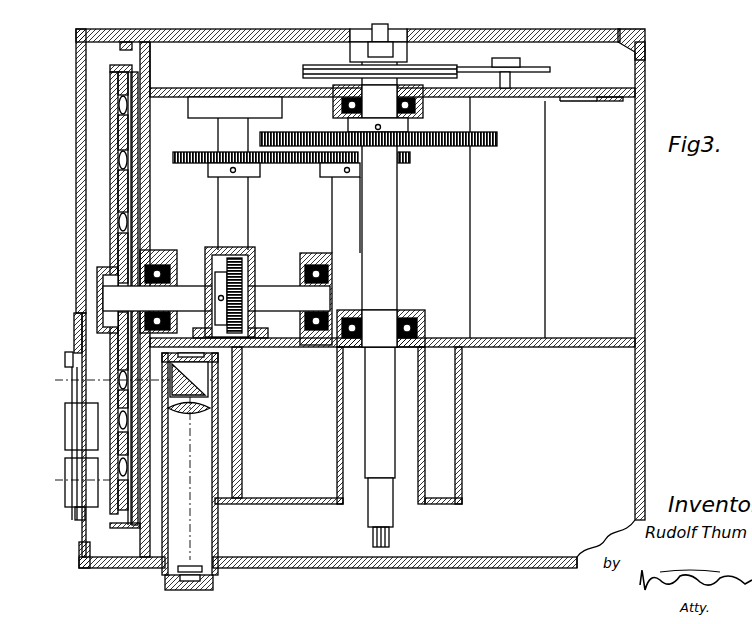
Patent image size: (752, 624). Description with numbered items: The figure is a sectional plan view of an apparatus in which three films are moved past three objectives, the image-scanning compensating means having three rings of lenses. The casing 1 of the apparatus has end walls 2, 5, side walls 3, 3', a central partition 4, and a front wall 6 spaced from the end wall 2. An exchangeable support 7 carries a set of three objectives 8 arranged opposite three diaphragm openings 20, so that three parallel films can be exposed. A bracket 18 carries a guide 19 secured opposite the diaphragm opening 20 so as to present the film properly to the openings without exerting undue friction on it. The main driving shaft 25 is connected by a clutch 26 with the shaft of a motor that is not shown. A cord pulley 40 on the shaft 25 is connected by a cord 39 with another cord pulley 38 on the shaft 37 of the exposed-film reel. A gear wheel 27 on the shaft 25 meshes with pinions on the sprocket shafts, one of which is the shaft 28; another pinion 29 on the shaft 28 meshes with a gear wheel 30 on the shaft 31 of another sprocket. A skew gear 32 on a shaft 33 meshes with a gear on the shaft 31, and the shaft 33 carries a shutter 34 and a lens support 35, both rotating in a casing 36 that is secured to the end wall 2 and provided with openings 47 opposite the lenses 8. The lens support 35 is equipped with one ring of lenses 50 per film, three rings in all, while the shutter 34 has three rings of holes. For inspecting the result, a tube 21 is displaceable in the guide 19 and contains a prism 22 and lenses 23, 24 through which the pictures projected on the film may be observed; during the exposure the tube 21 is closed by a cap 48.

The casing 1 is at (363, 302).
The end wall 2 is at (150, 197).
The side wall 3 is at (360, 33).
The side wall 3' is at (357, 559).
The central partition 4 is at (484, 338).
The end wall 5 is at (645, 204).
The front wall 6 is at (76, 243).
The exchangeable support 7 is at (75, 318).
The objectives 8 is at (64, 482).
The bracket 18 is at (257, 498).
The guide 19 is at (226, 505).
The diaphragm openings 20 is at (148, 386).
The tube 21 is at (168, 525).
The prism 22 is at (206, 383).
The lens 23 is at (211, 409).
The lens 24 is at (213, 585).
The main driving shaft 25 is at (395, 236).
The clutch 26 is at (384, 28).
The gear wheel 27 is at (455, 148).
The shaft 28 is at (334, 213).
The pinion 29 is at (313, 165).
The gear wheel 30 is at (205, 154).
The shaft 31 is at (222, 213).
The skew gear 32 is at (254, 252).
The shaft 33 is at (188, 286).
The shutter 34 is at (138, 121).
The lens support 35 is at (119, 210).
The casing 36 is at (119, 124).
The shaft 37 is at (512, 80).
The cord pulley 38 is at (525, 60).
The cord 39 is at (462, 66).
The cord pulley 40 is at (302, 72).
The openings 47 is at (116, 430).
The cap 48 is at (172, 590).
The lenses 50 is at (119, 162).